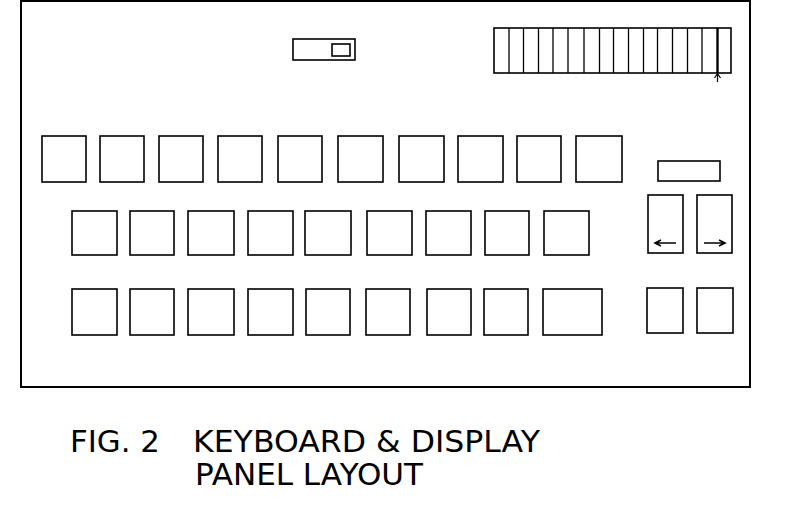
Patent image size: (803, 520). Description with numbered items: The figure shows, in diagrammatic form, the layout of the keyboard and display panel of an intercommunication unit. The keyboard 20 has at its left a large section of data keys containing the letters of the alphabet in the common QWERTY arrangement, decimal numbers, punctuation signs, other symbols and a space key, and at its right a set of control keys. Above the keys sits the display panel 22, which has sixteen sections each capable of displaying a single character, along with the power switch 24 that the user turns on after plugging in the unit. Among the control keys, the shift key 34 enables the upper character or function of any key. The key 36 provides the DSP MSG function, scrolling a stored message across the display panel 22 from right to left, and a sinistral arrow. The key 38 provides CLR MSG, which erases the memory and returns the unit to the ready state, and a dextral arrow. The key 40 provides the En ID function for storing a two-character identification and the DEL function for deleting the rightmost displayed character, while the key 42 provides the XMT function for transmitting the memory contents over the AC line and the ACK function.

The keyboard 20 is at (640, 338).
The display panel 22 is at (707, 28).
The power switch 24 is at (352, 37).
The shift key 34 is at (703, 161).
The key 36 is at (648, 216).
The key 38 is at (733, 213).
The key 40 is at (650, 288).
The key 42 is at (733, 300).